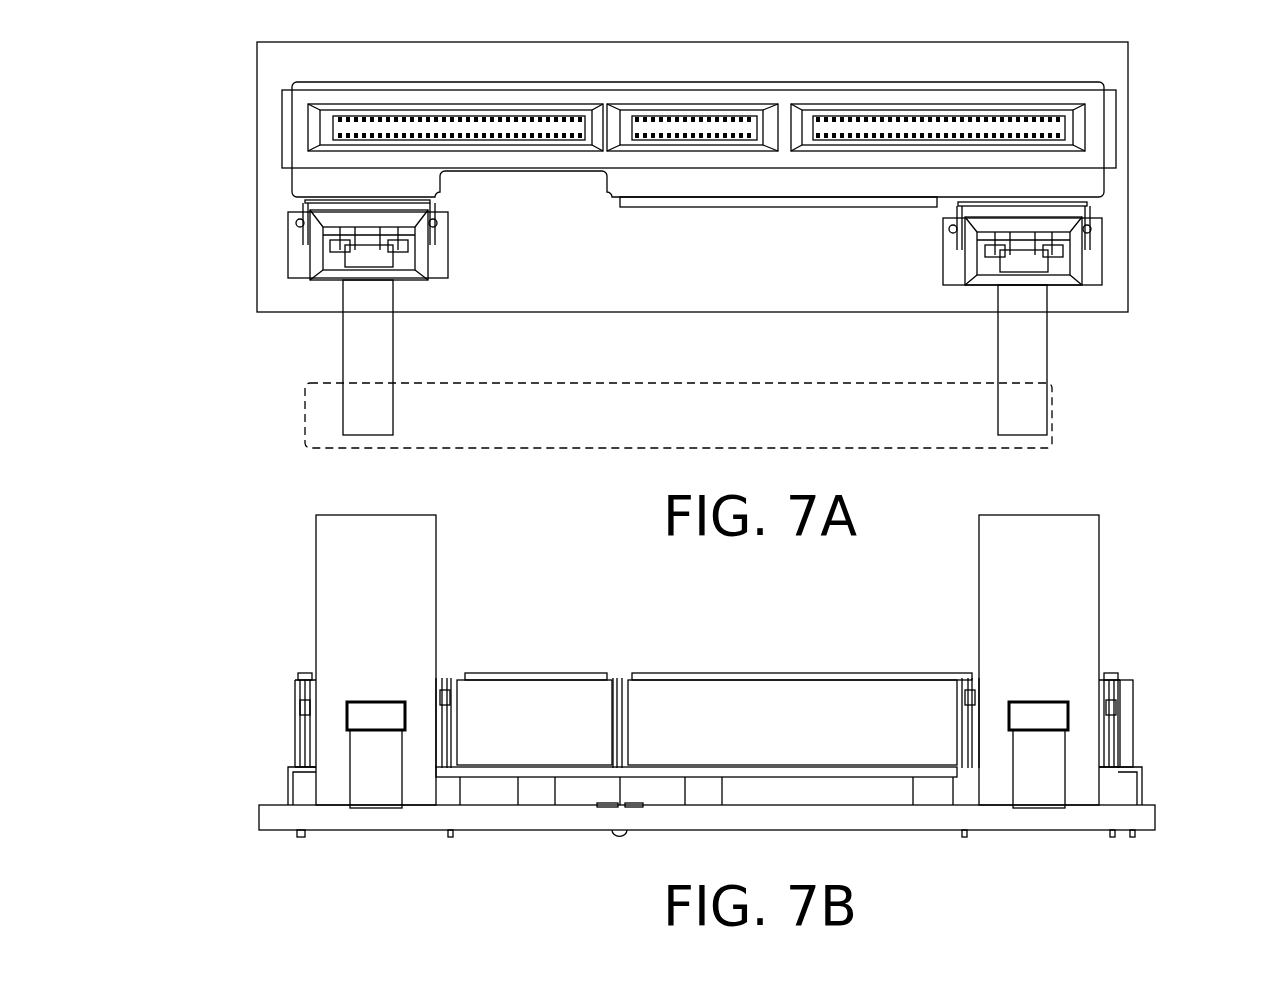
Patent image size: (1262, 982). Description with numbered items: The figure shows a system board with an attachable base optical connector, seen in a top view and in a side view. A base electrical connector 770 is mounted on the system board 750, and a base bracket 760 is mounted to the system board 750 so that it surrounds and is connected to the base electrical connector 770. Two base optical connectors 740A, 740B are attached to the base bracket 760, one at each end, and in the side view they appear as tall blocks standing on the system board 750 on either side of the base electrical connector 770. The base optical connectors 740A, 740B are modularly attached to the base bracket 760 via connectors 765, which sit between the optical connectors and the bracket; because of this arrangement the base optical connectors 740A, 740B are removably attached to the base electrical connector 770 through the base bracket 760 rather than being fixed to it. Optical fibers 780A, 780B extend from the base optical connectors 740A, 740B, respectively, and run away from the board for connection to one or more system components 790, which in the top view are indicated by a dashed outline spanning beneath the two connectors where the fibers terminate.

In FIG. 7A, the base optical connector 740A is at (288, 250).
In FIG. 7B, the base optical connector 740A is at (320, 595).
In FIG. 7A, the base optical connector 740B is at (1102, 248).
In FIG. 7B, the base optical connector 740B is at (1100, 592).
In FIG. 7A, the system board 750 is at (1128, 125).
In FIG. 7B, the system board 750 is at (1015, 820).
In FIG. 7A, the base bracket 760 is at (288, 130).
In FIG. 7B, the connectors 765 is at (302, 670).
In FIG. 7A, the base electrical connector 770 is at (687, 90).
In FIG. 7B, the base electrical connector 770 is at (917, 807).
In FIG. 7A, the optical fiber 780A is at (343, 370).
In FIG. 7B, the optical fiber 780A is at (350, 770).
In FIG. 7A, the optical fiber 780B is at (1048, 370).
In FIG. 7B, the optical fiber 780B is at (1067, 768).
In FIG. 7A, the system components 790 is at (1052, 430).